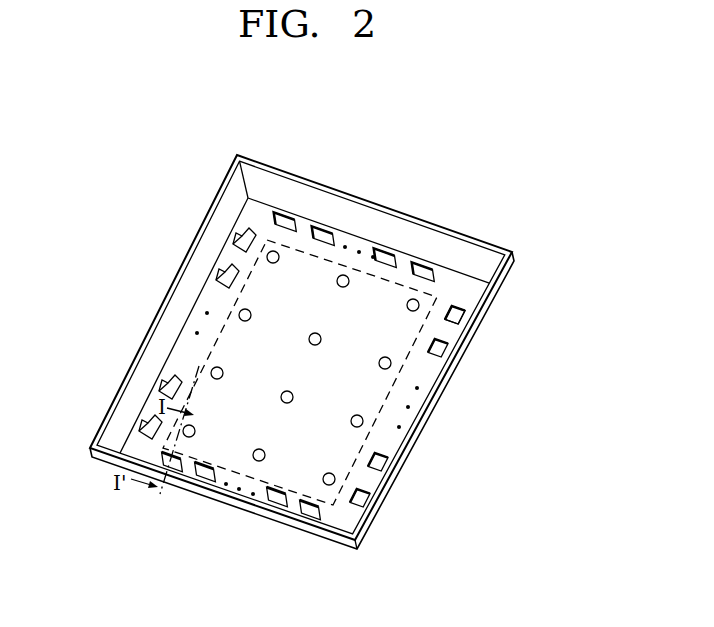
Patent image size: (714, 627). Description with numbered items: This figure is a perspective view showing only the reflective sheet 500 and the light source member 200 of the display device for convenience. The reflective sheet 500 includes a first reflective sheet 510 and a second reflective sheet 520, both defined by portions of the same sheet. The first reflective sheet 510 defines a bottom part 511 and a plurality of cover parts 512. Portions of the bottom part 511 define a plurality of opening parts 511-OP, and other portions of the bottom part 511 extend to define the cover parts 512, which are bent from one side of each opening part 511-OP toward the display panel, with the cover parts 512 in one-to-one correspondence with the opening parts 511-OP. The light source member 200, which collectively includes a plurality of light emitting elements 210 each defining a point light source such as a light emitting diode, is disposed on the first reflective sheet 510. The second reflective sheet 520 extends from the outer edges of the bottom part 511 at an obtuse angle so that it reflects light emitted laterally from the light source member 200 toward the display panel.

The reflective sheet 500 is at (401, 155).
The first reflective sheet 510 is at (149, 249).
The bottom part 511 is at (242, 233).
The cover part 512 is at (230, 253).
The opening part 511-OP is at (455, 302).
The second reflective sheet 520 is at (158, 350).
The light source member 200 is at (420, 328).
The light emitting element 210 is at (389, 362).